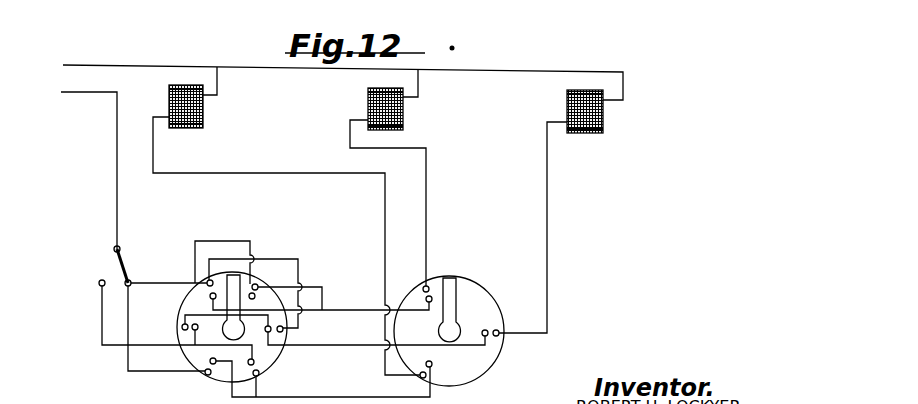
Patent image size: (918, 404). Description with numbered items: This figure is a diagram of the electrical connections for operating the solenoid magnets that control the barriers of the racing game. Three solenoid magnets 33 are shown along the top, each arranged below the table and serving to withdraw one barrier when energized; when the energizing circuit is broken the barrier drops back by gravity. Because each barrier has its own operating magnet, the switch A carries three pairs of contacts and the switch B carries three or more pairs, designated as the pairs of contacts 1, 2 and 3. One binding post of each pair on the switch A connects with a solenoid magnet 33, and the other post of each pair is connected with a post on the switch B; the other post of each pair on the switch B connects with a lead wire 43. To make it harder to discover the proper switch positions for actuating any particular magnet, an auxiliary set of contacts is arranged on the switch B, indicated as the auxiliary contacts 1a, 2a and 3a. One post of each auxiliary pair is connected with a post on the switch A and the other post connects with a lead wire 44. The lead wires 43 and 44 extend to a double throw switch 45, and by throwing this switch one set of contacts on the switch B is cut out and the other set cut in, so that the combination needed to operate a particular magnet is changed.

The solenoid magnet 33 is at (203, 109).
The lead wire 43 is at (133, 297).
The lead wire 44 is at (98, 313).
The double throw switch 45 is at (122, 256).
The pair of contacts 1 is at (205, 377).
The auxiliary contacts 1a is at (264, 375).
The pair of contacts 2 is at (283, 338).
The auxiliary contacts 2a is at (264, 280).
The pair of contacts 3 is at (206, 281).
The auxiliary contacts 3a is at (177, 326).
The switch A is at (477, 302).
The switch B is at (284, 352).